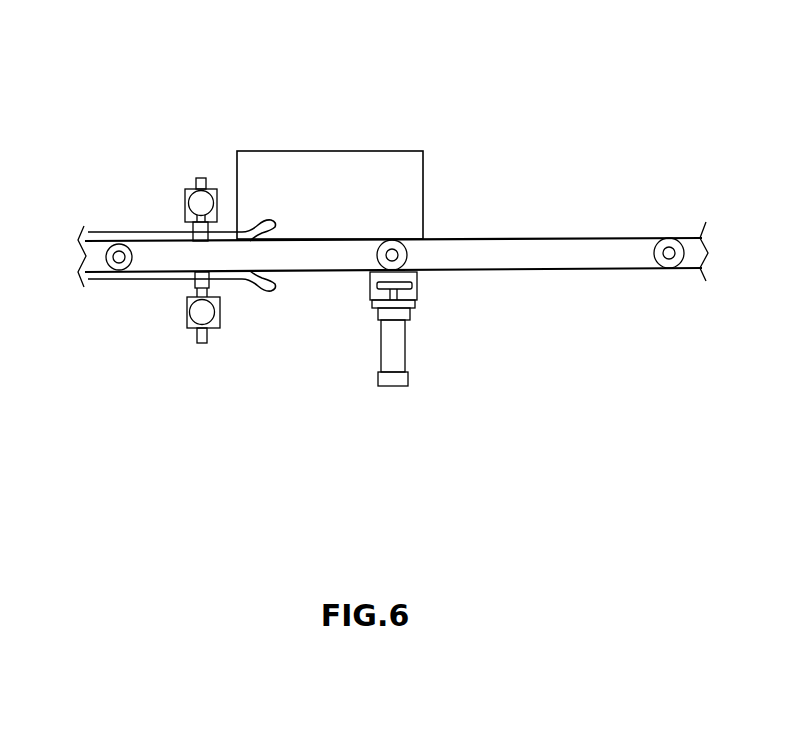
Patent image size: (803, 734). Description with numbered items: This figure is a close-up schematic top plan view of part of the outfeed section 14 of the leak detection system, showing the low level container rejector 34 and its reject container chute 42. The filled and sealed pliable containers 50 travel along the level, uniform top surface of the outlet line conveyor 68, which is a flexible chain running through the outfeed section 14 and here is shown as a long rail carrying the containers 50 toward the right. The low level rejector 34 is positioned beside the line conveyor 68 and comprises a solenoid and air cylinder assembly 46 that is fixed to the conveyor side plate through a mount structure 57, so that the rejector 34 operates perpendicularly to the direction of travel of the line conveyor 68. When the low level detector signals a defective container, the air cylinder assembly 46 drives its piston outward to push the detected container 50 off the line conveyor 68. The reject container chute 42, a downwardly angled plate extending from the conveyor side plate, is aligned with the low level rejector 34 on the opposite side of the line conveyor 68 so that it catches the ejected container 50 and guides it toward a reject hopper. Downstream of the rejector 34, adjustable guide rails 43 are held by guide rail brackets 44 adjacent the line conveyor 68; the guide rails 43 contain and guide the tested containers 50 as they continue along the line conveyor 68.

The outfeed section 14 is at (303, 365).
The low level container rejector 34 is at (443, 405).
The reject container chute 42 is at (371, 158).
The adjustable guide rails 43 is at (121, 237).
The guide rail brackets 44 is at (218, 152).
The solenoid and air cylinder assembly 46 is at (400, 351).
The pliable container 50 is at (670, 238).
The mount structure 57 is at (417, 303).
The line conveyor 68 is at (572, 243).